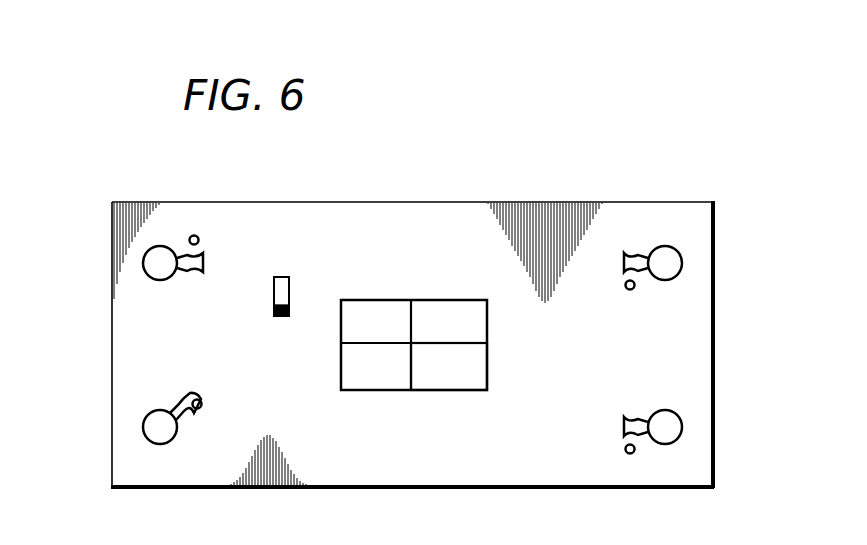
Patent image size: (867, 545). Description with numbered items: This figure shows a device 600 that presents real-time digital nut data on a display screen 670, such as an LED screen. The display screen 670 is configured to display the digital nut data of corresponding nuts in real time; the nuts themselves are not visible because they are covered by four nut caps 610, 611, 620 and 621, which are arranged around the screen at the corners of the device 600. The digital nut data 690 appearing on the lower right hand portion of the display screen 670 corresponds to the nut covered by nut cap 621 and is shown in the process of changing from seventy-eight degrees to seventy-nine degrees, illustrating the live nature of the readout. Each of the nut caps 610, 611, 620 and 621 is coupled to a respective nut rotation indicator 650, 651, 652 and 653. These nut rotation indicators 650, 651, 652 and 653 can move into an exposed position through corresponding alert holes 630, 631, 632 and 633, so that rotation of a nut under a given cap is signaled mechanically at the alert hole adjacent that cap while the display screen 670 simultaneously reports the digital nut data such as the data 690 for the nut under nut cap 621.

The device 600 is at (126, 158).
The nut cap 610 is at (143, 428).
The nut cap 611 is at (143, 263).
The nut cap 620 is at (682, 263).
The nut cap 621 is at (682, 427).
The alert hole 630 is at (200, 410).
The alert hole 631 is at (192, 234).
The alert hole 632 is at (633, 289).
The alert hole 633 is at (627, 453).
The nut rotation indicator 650 is at (184, 403).
The nut rotation indicator 651 is at (196, 273).
The nut rotation indicator 652 is at (630, 258).
The nut rotation indicator 653 is at (642, 437).
The display screen 670 is at (352, 313).
The digital nut data 690 is at (452, 380).